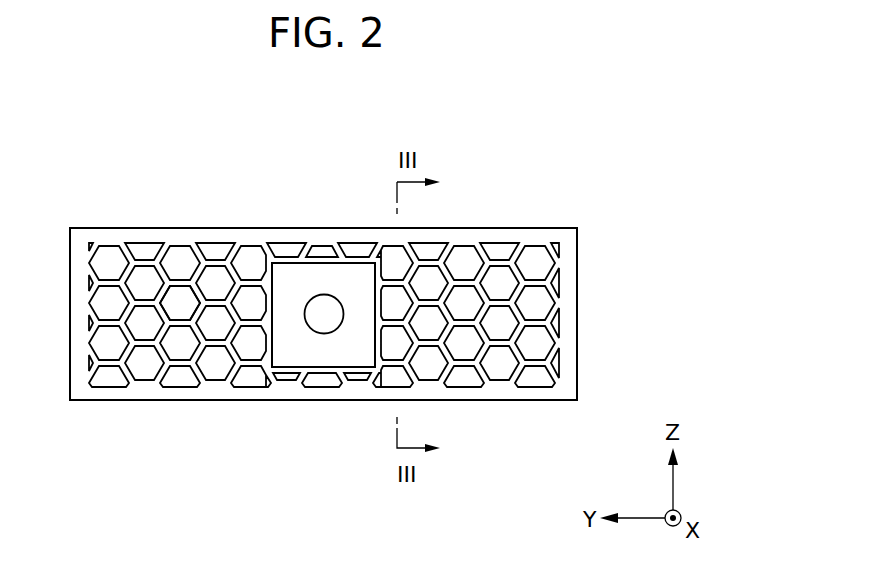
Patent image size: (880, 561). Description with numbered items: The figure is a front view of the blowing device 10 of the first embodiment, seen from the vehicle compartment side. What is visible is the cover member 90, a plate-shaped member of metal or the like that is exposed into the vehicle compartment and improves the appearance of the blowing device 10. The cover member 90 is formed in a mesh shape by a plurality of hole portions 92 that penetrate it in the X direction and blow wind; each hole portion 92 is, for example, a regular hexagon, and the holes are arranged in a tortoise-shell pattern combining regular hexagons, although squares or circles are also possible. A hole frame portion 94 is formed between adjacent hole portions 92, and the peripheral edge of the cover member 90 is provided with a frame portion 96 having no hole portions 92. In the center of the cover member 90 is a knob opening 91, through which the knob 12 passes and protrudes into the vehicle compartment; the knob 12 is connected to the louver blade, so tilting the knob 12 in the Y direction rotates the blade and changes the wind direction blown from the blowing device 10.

The blowing device 10 is at (98, 160).
The knob 12 is at (329, 328).
The cover member 90 is at (223, 228).
The knob opening 91 is at (298, 352).
The hole portion 92 is at (189, 324).
The hole frame portion 94 is at (152, 345).
The frame portion 96 is at (115, 400).